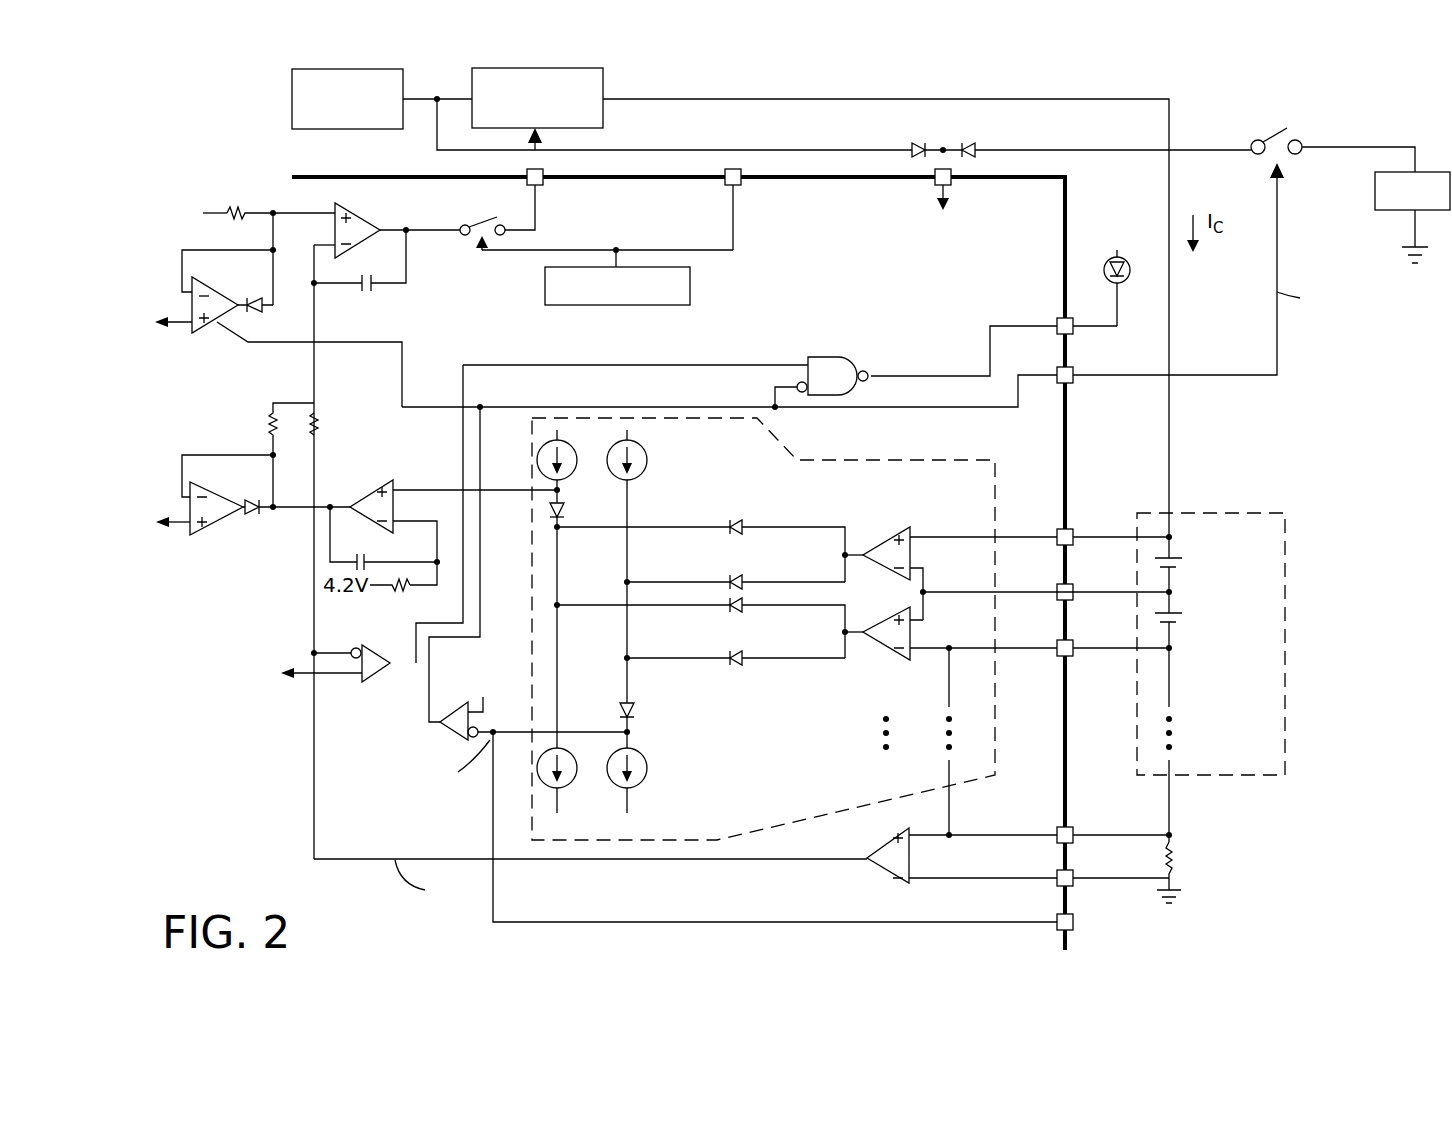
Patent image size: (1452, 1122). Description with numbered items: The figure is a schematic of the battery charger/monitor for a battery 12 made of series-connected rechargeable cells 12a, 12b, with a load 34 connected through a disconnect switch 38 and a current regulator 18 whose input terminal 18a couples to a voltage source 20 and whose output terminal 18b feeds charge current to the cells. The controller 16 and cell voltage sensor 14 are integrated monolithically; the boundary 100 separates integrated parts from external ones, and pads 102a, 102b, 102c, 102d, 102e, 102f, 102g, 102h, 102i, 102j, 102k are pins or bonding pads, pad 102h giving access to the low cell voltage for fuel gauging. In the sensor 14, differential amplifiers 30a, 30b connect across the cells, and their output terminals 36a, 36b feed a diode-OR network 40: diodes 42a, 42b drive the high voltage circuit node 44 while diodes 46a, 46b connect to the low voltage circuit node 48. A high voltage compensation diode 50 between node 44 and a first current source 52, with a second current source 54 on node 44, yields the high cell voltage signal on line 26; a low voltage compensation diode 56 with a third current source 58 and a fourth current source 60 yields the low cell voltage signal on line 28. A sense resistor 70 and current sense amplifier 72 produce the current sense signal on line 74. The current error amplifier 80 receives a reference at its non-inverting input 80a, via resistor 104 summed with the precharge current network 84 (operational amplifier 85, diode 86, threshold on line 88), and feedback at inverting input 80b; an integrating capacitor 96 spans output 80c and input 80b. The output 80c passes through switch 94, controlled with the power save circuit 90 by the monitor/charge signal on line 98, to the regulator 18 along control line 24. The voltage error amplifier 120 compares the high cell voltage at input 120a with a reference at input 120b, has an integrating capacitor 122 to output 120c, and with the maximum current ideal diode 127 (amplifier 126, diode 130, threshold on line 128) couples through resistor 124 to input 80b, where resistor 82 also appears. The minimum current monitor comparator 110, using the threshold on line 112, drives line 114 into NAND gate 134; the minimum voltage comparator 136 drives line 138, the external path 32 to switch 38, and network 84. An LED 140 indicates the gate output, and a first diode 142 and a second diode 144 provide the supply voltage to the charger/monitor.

The battery 12 is at (1225, 513).
The rechargeable battery cell 12a is at (1184, 560).
The rechargeable battery cell 12b is at (1184, 615).
The cell voltage sensor 14 is at (892, 460).
The controller 16 is at (490, 333).
The current regulator 18 is at (603, 124).
The input terminal 18a is at (472, 97).
The output terminal 18b is at (603, 99).
The voltage source 20 is at (292, 96).
The control voltage line 24 is at (446, 234).
The signal line 26 is at (520, 490).
The signal line 28 is at (493, 730).
The differential amplifier 30a is at (905, 528).
The differential amplifier 30b is at (920, 608).
The external path 32 is at (1277, 348).
The load 34 is at (1378, 206).
The output terminal 36a is at (845, 570).
The output terminal 36b is at (875, 662).
The disconnect switch 38 is at (1265, 142).
The network 40 is at (606, 590).
The diode 42a is at (740, 525).
The diode 42b is at (742, 608).
The high voltage circuit node 44 is at (560, 540).
The diode 46a is at (735, 580).
The diode 46b is at (742, 658).
The low voltage circuit node 48 is at (627, 660).
The high voltage compensation diode 50 is at (566, 512).
The first current source 52 is at (570, 448).
The second current source 54 is at (570, 786).
The low voltage compensation diode 56 is at (634, 712).
The third current source 58 is at (640, 786).
The fourth current source 60 is at (650, 460).
The sense resistor 70 is at (1172, 866).
The current sense amplifier 72 is at (895, 885).
The line 74 is at (355, 858).
The current error amplifier 80 is at (372, 242).
The non-inverting input terminal 80a is at (335, 212).
The inverting input terminal 80b is at (335, 245).
The output terminal 80c is at (348, 296).
The resistor 82 is at (318, 420).
The precharge current network 84 is at (213, 275).
The operational amplifier 85 is at (228, 300).
The diode 86 is at (255, 312).
The signal line 88 is at (183, 325).
The power save circuit 90 is at (690, 300).
The switch 94 is at (480, 222).
The integrating capacitor 96 is at (328, 552).
The line 98 is at (640, 250).
The boundary 100 is at (326, 177).
The pad 102a is at (543, 186).
The pad 102b is at (798, 225).
The pad 102c is at (951, 186).
The pad 102d is at (1073, 331).
The pad 102e is at (1073, 381).
The pad 102f is at (1073, 530).
The pad 102g is at (1073, 585).
The bonding pad 102h is at (1073, 640).
The terminal 102i is at (1073, 830).
The terminal 102j is at (1073, 876).
The terminal 102k is at (1073, 928).
The resistor 104 is at (238, 210).
The minimum current monitor comparator 110 is at (385, 648).
The line 112 is at (305, 678).
The line 114 is at (540, 365).
The voltage error amplifier 120 is at (393, 482).
The non-inverting input terminal 120a is at (396, 494).
The inverting input terminal 120b is at (395, 526).
The output terminal 120c is at (352, 506).
The integrating capacitor 122 is at (350, 560).
The resistor 124 is at (270, 421).
The operational amplifier 126 is at (220, 532).
The maximum current ideal diode 127 is at (210, 478).
The line 128 is at (180, 518).
The diode 130 is at (250, 500).
The NAND gate 134 is at (838, 357).
The minimum voltage comparator 136 is at (440, 730).
The line 138 is at (525, 407).
The LED 140 is at (1105, 270).
The first diode 142 is at (914, 144).
The second diode 144 is at (963, 143).